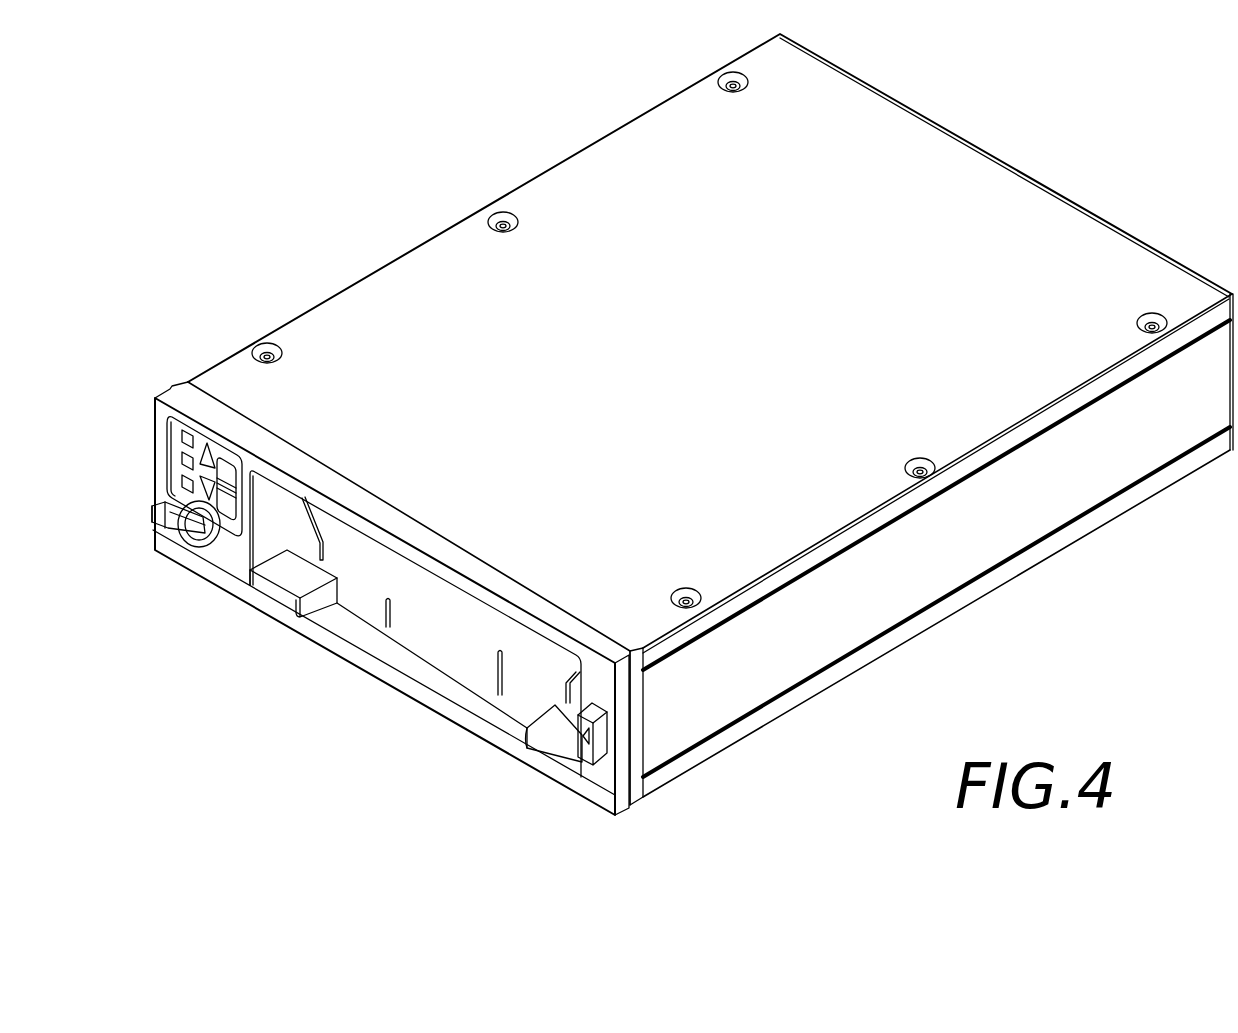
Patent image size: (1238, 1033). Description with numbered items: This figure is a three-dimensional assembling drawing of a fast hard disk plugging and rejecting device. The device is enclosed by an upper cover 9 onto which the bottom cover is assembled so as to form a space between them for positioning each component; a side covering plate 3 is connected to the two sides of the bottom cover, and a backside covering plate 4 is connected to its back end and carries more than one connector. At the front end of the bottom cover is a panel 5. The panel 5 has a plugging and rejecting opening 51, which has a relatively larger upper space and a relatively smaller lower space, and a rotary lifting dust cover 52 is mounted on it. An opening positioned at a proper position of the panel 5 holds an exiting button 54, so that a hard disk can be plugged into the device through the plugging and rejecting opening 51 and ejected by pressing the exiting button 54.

The side covering plate 3 is at (1105, 465).
The backside covering plate 4 is at (1010, 160).
The panel 5 is at (339, 603).
The upper cover 9 is at (595, 168).
The plugging and rejecting opening 51 is at (290, 527).
The rotary lifting dust cover 52 is at (430, 618).
The exiting button 54 is at (580, 738).